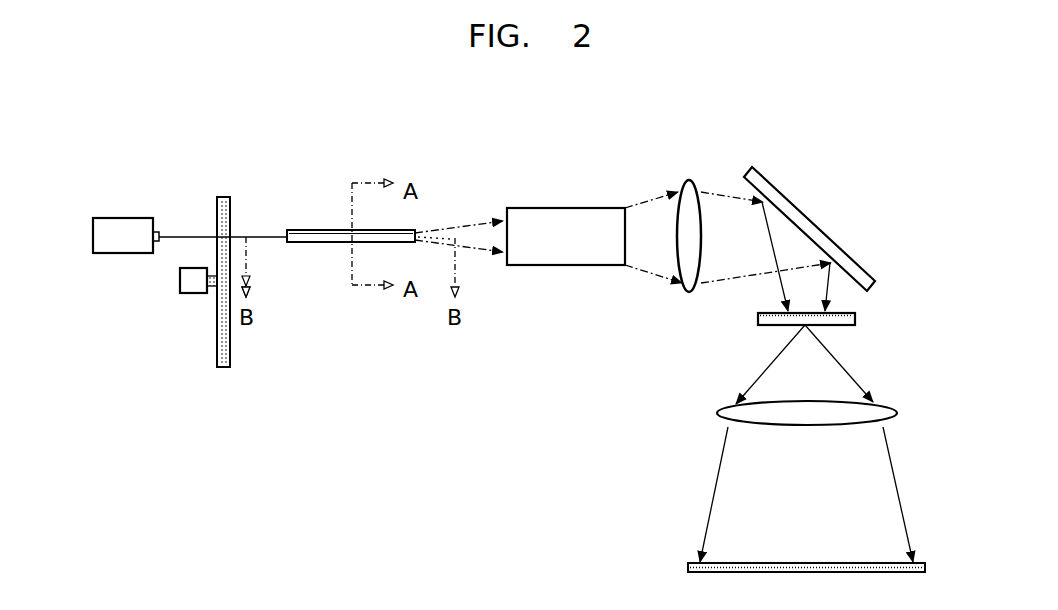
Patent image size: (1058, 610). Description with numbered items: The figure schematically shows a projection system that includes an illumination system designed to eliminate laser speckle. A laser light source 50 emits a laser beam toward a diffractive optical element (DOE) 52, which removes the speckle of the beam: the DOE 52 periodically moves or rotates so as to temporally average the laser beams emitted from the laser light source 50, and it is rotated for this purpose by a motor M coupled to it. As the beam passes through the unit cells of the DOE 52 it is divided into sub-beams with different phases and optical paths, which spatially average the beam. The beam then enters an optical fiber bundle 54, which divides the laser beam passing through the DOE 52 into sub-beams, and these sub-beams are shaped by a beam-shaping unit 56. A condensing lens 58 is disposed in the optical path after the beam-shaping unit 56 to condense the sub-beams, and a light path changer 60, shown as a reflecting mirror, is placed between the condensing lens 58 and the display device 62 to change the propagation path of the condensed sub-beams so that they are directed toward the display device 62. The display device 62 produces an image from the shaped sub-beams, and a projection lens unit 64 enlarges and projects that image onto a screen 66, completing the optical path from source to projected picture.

The laser light source 50 is at (131, 218).
The diffractive optical element (DOE) 52 is at (225, 197).
The motor M is at (192, 293).
The optical fiber bundle 54 is at (300, 230).
The beam-shaping unit 56 is at (560, 208).
The condensing lens 58 is at (689, 180).
The light path changer 60 is at (808, 217).
The display device 62 is at (862, 318).
The projection lens unit 64 is at (717, 414).
The screen 66 is at (688, 570).